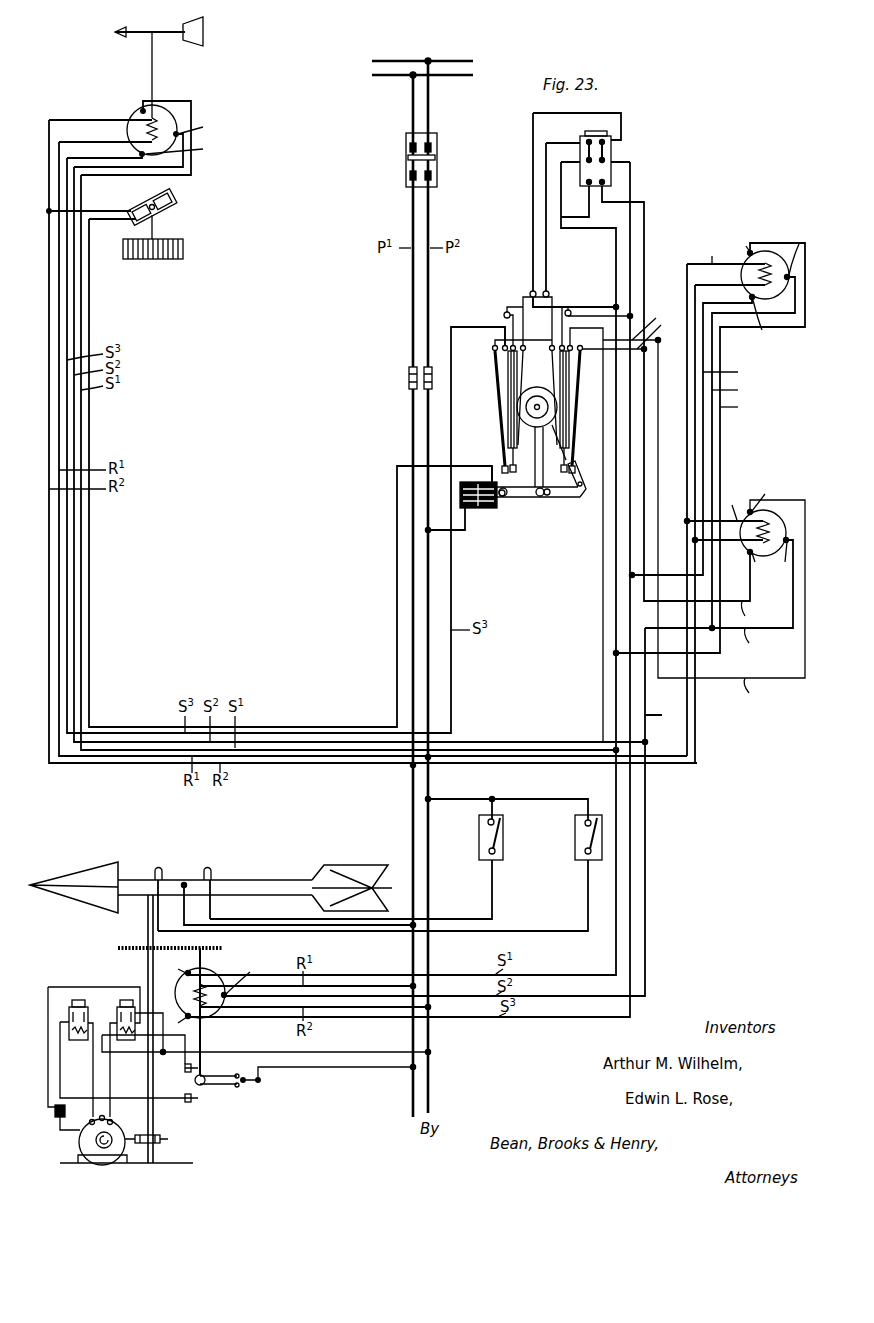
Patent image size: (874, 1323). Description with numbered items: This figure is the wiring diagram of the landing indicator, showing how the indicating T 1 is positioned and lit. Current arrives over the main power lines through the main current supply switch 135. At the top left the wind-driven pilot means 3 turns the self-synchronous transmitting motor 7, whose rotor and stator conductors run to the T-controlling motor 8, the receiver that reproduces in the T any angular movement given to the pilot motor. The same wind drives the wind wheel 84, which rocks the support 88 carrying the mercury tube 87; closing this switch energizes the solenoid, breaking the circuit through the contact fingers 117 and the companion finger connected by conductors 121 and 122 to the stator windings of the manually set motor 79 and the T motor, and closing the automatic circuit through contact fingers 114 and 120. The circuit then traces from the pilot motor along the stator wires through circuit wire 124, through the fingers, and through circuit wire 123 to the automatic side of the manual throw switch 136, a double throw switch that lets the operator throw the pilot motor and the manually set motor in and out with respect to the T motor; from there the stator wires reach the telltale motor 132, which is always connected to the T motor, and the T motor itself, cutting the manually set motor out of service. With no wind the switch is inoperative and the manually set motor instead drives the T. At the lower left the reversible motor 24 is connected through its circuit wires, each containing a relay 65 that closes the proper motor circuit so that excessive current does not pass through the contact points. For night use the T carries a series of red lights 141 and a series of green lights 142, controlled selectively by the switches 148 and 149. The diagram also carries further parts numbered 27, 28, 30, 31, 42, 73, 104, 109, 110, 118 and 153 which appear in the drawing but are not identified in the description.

The indicating T 1 is at (264, 880).
The pilot means 3 is at (136, 32).
The transmitting motor 7 is at (170, 118).
The T-controlling motor 8 is at (216, 976).
The reversible motor 24 is at (103, 1165).
The motor armature 27 is at (92, 1141).
The motor shaft coupling 28 is at (161, 1139).
The commutator segment 30 is at (122, 948).
The commutator shaft 31 is at (215, 948).
The contact lever 42 is at (208, 1090).
The relay 65 is at (125, 1007).
The terminal block 73 is at (55, 1115).
The manually set motor 79 is at (768, 512).
The wind wheel 84 is at (184, 249).
The switch tube 87 is at (140, 204).
The rockable support 88 is at (173, 204).
The solenoid coil 104 is at (447, 532).
The cam hub 109 is at (522, 399).
The cam 110 is at (541, 427).
The contact finger 114 is at (520, 360).
The contact finger 117 is at (500, 444).
The armature lever 118 is at (540, 487).
The contact finger 120 is at (499, 374).
The conductor 121 is at (569, 310).
The conductor 122 is at (660, 332).
The circuit wire 123 is at (533, 265).
The circuit wire 124 is at (475, 327).
The telltale motor 132 is at (768, 251).
The main current supply switch 135 is at (437, 163).
The manual throw switch 136 is at (612, 152).
The red lights 141 is at (212, 875).
The green lights 142 is at (164, 875).
The switch 148 is at (503, 835).
The switch 149 is at (575, 851).
The fuses 153 is at (405, 379).